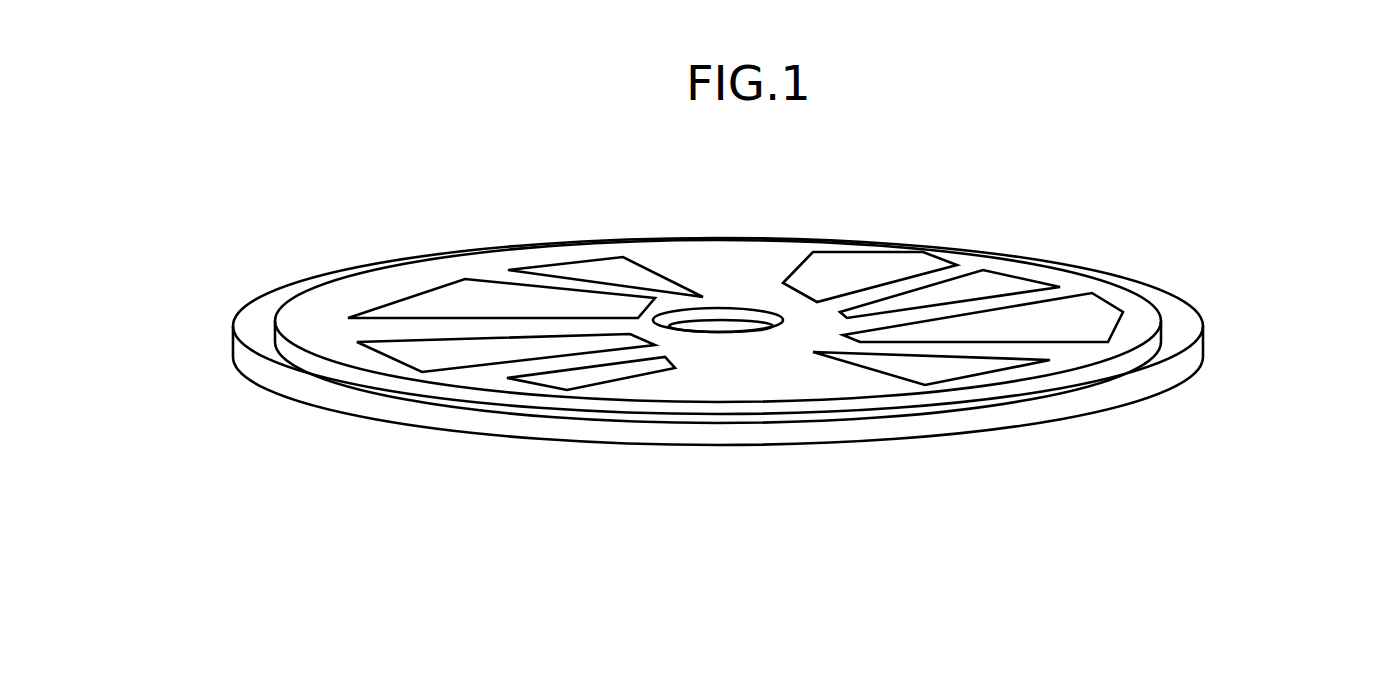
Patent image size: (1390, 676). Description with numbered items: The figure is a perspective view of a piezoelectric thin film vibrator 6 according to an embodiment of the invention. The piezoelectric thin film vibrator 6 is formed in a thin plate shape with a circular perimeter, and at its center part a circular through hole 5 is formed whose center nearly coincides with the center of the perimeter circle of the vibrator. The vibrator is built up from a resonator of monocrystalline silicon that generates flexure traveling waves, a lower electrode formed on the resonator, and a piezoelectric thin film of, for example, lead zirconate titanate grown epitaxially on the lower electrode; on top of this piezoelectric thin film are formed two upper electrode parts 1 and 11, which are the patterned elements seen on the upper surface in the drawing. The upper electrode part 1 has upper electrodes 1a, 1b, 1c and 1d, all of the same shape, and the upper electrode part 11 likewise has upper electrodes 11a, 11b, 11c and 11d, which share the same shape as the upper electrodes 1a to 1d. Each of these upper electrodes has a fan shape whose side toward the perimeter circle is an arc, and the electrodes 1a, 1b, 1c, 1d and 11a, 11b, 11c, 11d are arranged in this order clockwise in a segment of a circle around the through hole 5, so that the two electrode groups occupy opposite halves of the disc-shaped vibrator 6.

The upper electrode part 1 is at (1345, 195).
The upper electrode 1a is at (882, 267).
The upper electrode 1b is at (1008, 282).
The upper electrode 1c is at (1092, 322).
The upper electrode 1d is at (953, 372).
The circular through hole 5 is at (717, 320).
The piezoelectric thin film vibrator 6 is at (1207, 458).
The upper electrode part 11 is at (118, 200).
The upper electrode 11a is at (567, 379).
The upper electrode 11b is at (432, 348).
The upper electrode 11c is at (473, 297).
The upper electrode 11d is at (597, 267).